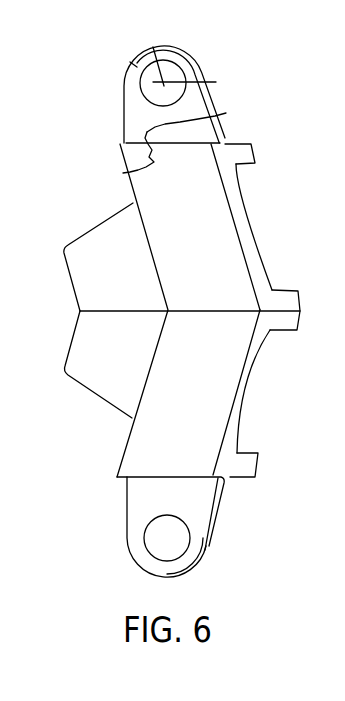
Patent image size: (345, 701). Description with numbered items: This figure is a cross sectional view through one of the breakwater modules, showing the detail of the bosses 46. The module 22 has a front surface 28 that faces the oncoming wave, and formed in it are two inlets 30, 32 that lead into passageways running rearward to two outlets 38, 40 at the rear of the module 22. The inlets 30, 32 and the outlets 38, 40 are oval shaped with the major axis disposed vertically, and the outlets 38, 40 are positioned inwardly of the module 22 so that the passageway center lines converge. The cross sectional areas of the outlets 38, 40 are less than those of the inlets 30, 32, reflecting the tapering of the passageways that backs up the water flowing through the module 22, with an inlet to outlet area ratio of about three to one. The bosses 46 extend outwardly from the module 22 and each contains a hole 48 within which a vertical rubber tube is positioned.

The module 22 is at (99, 494).
The front surface 28 is at (265, 273).
The inlet 30 is at (243, 220).
The inlet 32 is at (243, 402).
The outlet 38 is at (70, 280).
The outlet 40 is at (67, 355).
The boss 46 is at (122, 93).
The hole 48 is at (176, 71).